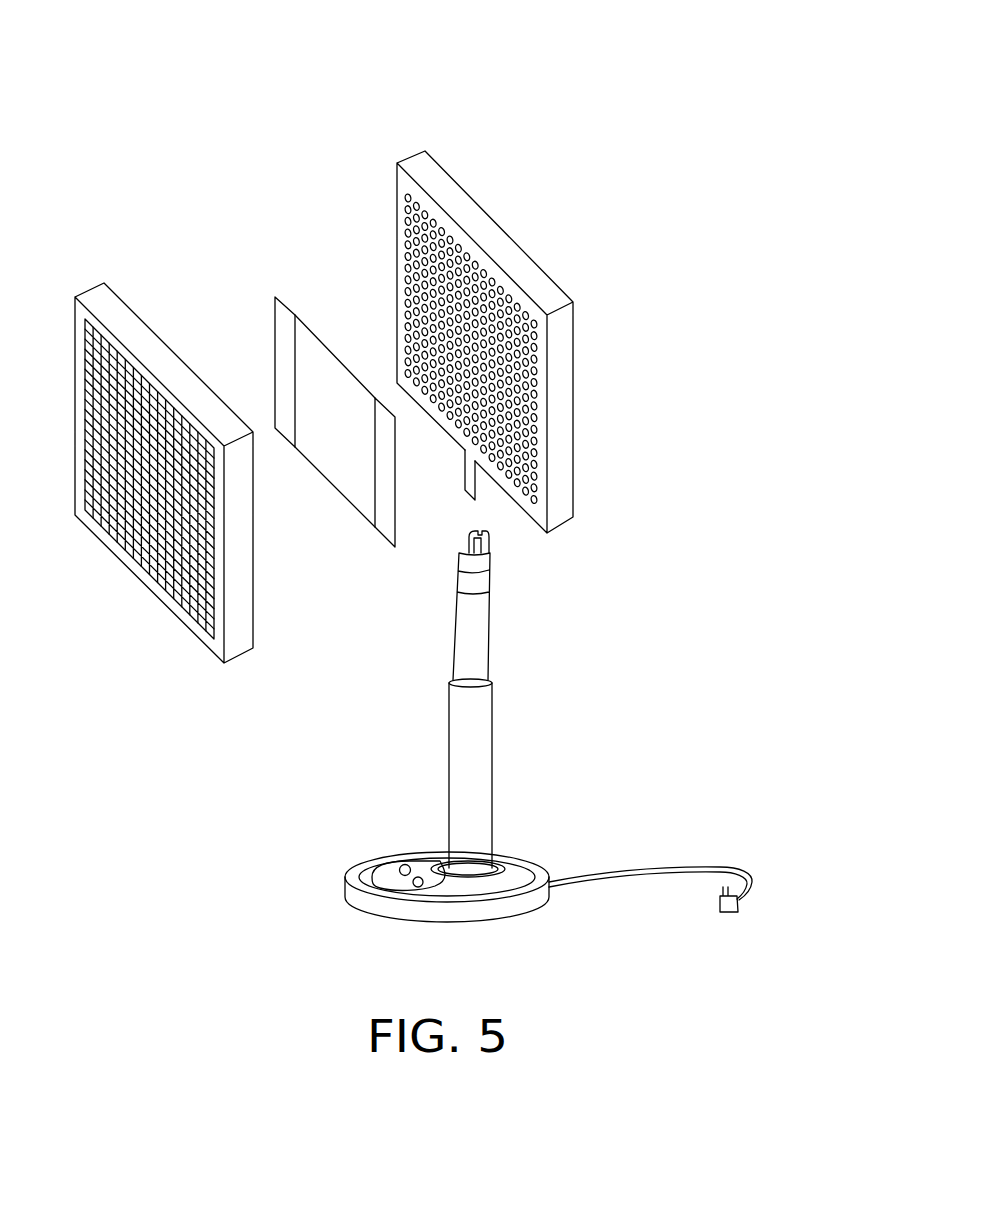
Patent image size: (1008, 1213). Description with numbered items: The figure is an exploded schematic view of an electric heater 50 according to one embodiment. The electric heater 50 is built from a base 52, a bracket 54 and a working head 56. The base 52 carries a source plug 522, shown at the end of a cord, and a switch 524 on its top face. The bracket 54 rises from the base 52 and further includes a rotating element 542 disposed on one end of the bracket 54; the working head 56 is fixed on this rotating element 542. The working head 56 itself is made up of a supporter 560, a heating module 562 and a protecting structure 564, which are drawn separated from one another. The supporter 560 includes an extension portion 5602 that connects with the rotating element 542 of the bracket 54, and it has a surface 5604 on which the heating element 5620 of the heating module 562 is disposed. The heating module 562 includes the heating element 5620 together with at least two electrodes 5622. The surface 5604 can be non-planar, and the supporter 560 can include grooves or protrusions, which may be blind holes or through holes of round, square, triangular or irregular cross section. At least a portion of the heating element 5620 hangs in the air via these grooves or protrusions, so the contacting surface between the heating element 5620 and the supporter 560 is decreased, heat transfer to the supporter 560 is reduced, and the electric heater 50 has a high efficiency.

The electric heater 50 is at (548, 68).
The base 52 is at (356, 876).
The source plug 522 is at (742, 904).
The switch 524 is at (407, 862).
The bracket 54 is at (485, 738).
The rotating element 542 is at (483, 545).
The working head 56 is at (273, 143).
The supporter 560 is at (407, 187).
The extension portion 5602 is at (486, 485).
The surface 5604 is at (476, 264).
The heating module 562 is at (329, 302).
The heating element 5620 is at (341, 460).
The electrodes 5622 is at (287, 332).
The protecting structure 564 is at (128, 323).